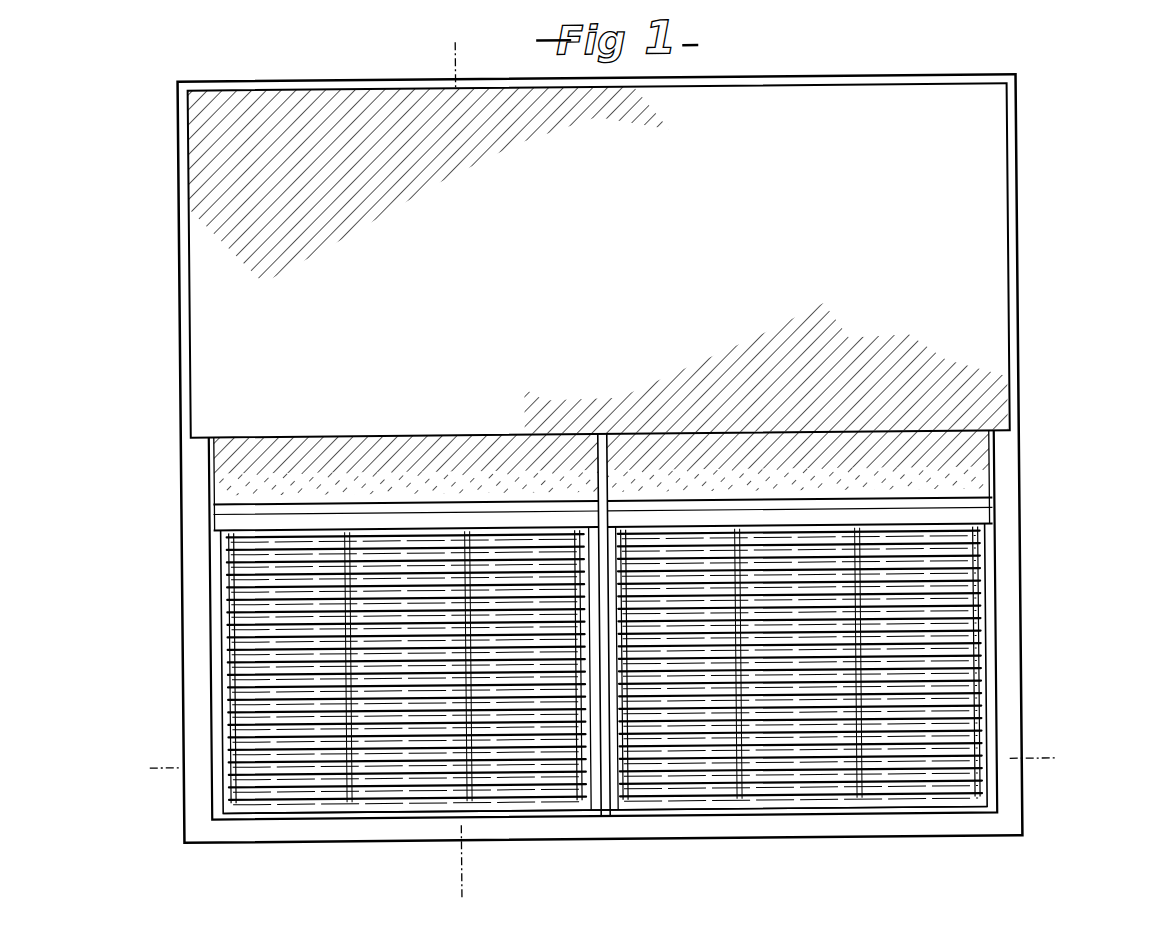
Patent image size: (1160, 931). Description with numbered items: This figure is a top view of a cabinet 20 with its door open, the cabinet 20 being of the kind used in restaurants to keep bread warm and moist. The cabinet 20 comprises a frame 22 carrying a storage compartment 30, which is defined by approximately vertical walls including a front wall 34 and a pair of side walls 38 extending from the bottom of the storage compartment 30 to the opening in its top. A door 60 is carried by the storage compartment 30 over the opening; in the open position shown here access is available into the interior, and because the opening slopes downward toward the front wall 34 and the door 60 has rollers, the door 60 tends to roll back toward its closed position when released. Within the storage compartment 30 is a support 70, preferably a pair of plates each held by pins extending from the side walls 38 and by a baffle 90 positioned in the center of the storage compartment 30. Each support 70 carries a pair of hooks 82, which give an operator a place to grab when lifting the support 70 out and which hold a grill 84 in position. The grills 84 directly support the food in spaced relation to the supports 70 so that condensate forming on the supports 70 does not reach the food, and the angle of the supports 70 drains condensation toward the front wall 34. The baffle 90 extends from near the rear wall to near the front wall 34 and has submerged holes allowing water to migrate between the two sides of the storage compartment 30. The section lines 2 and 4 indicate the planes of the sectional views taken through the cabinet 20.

The cabinet 20 is at (1050, 106).
The frame 22 is at (1016, 394).
The storage compartment 30 is at (988, 642).
The front wall 34 is at (693, 806).
The side walls 38 is at (224, 595).
The door 60 is at (390, 500).
The support 70 is at (269, 777).
The hooks 82 is at (622, 562).
The grill 84 is at (964, 581).
The baffle 90 is at (602, 812).
The section line 2- 2 is at (155, 738).
The section line 4- 4 is at (482, 56).